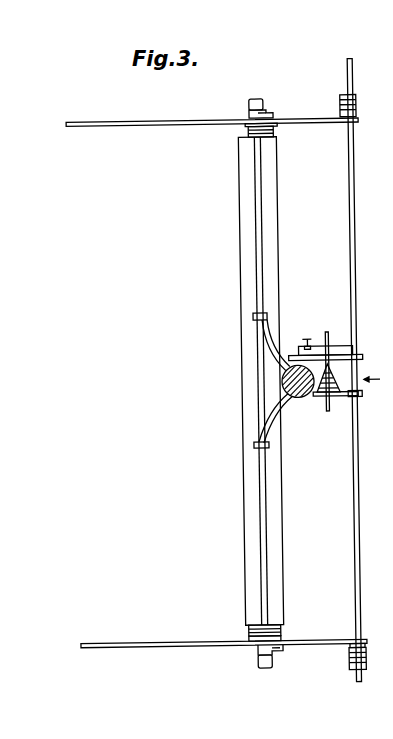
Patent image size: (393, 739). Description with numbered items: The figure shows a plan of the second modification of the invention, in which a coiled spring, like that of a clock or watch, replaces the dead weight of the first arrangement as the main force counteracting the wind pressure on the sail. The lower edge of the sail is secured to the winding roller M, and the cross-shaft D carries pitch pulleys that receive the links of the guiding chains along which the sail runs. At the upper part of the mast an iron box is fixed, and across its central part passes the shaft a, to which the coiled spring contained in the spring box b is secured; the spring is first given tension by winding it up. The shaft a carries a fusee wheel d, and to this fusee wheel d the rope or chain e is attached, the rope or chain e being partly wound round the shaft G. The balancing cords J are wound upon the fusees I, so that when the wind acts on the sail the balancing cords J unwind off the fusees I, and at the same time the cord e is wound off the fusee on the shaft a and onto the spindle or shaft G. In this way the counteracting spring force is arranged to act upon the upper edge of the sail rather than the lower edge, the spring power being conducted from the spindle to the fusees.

The shaft G is at (359, 369).
The fusee I is at (359, 381).
The balancing cord J is at (217, 383).
The winding roller M is at (269, 382).
The cross-shaft D is at (283, 380).
The fusee wheel d is at (326, 371).
The rope or chain e is at (330, 378).
The shaft a is at (328, 374).
The spring box b is at (305, 342).